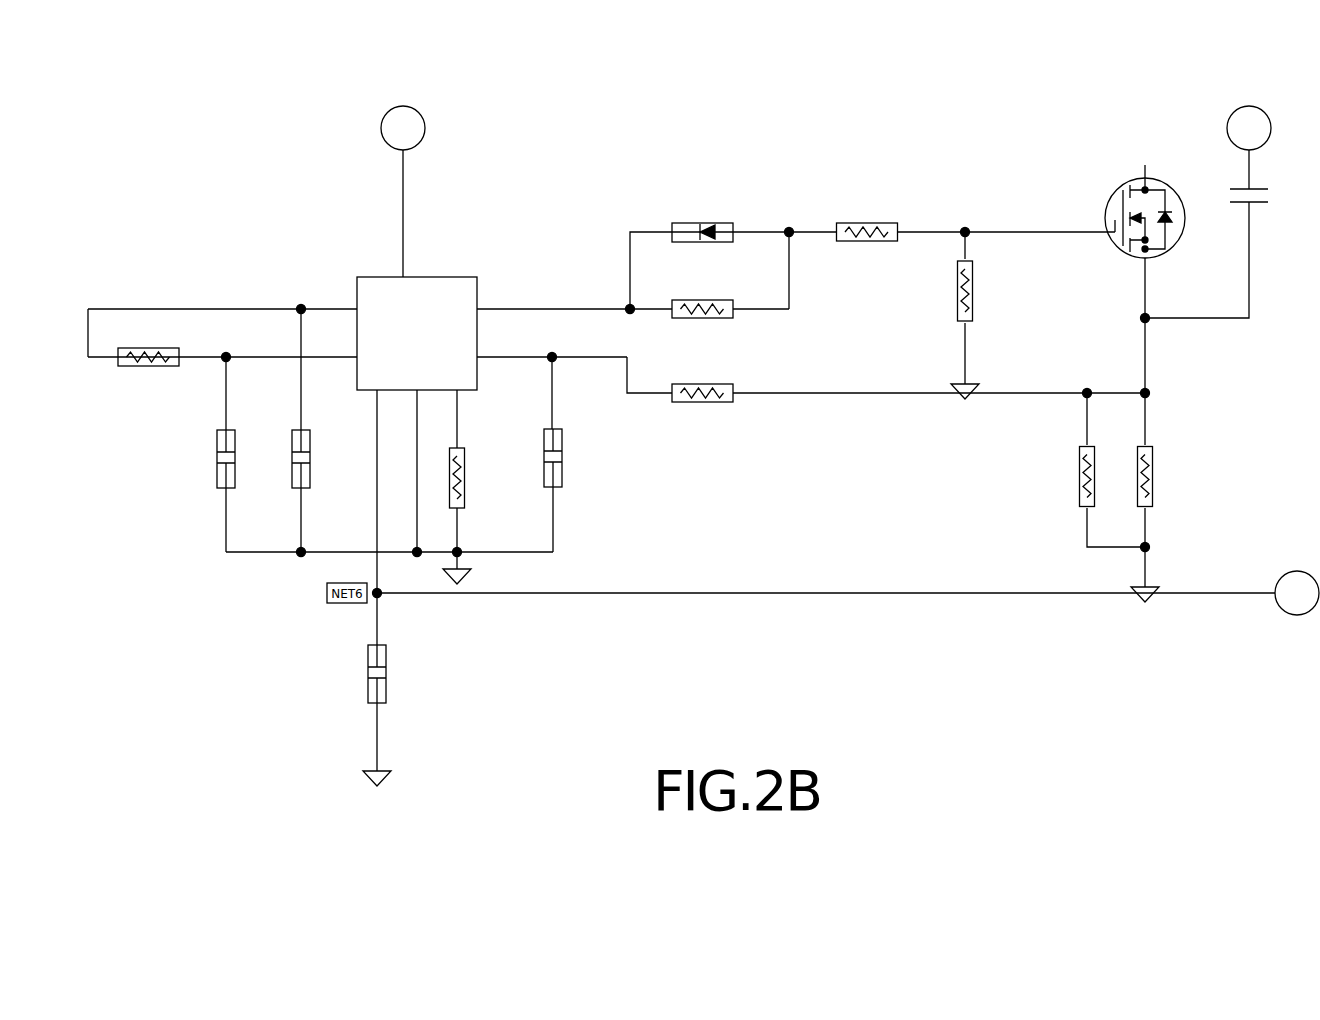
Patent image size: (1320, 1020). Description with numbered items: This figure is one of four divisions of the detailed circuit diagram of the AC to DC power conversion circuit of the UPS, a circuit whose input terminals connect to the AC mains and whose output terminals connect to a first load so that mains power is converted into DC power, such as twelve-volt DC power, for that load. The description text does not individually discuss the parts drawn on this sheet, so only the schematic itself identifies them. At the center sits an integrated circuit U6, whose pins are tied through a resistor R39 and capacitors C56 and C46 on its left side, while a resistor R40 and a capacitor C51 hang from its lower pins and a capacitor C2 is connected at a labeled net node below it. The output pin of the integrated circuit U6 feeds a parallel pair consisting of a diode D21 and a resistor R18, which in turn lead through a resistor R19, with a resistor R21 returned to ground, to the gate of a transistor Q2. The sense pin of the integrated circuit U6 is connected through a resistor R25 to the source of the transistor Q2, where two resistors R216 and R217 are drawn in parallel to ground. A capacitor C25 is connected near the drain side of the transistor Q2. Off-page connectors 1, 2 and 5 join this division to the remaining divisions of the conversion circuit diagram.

The PWM controller IC UC3845SM U6 is at (441, 321).
The resistor 3.3K SMF(0603) R39 is at (150, 357).
The capacitor 472JSM/0603 C56 is at (229, 457).
The capacitor 104KSM/0603 C46 is at (301, 457).
The resistor 10K SMF(1206) R40 is at (457, 476).
The capacitor (NC) C51 is at (552, 458).
The capacitor 104KSM/0603 C2 is at (376, 671).
The diode 1N4148WSM D21 is at (705, 230).
The resistor 150ohm SMF(0603) R18 is at (704, 310).
The resistor 10ohm SMF(0603) R19 is at (868, 232).
The resistor 20K SMF(1206) R21 is at (965, 302).
The resistor 1K SMF(1206) R25 is at (701, 394).
The resistor 10ohm SMF(1206) R216 is at (1063, 481).
The resistor 4.7ohm SMF(1206) R217 is at (1171, 478).
The capacitor (NC) C25 is at (1248, 195).
The MOSFET FQPF5N60C Q2 is at (1107, 223).
The off-page connector 1 is at (403, 128).
The off-page connector 2 is at (1249, 128).
The off-page connector 5 is at (1297, 593).